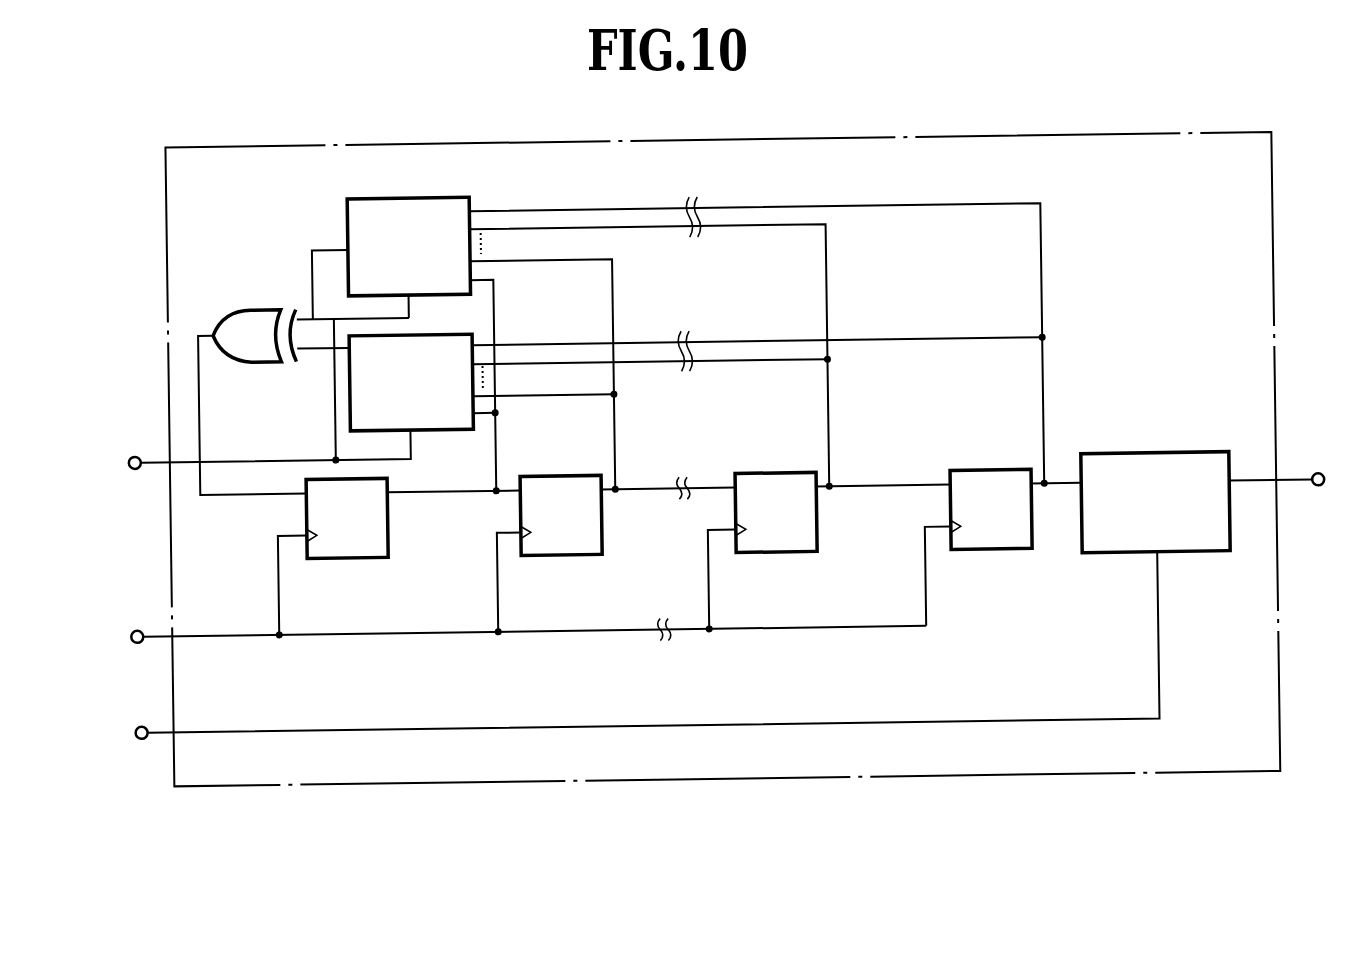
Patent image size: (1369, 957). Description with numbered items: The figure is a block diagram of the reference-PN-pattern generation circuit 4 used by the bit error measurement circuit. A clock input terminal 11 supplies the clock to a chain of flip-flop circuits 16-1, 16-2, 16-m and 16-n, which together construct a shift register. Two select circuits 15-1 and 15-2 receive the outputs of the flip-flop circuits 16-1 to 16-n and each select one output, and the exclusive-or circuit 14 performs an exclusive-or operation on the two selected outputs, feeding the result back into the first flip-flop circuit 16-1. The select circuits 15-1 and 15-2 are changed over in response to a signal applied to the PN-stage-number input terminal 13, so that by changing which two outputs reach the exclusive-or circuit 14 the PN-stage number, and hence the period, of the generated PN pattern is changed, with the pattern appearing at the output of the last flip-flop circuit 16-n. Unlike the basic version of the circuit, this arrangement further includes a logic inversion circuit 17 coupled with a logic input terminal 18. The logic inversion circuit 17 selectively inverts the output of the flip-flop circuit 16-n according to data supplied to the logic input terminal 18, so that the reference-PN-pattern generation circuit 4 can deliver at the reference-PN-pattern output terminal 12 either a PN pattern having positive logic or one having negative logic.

The reference-PN-pattern generation circuit 4 is at (908, 140).
The clock input terminal 11 is at (133, 622).
The reference-PN-pattern output terminal 12 is at (1318, 494).
The PN-stage-number input terminal 13 is at (136, 447).
The exclusive-or circuit 14 is at (275, 301).
The select circuit 15-1 is at (455, 194).
The select circuit 15-2 is at (465, 324).
The flip-flop circuit 16-1 is at (353, 553).
The flip-flop circuit 16-2 is at (560, 553).
The flip-flop circuit 16-m is at (773, 553).
The flip-flop circuit 16-n is at (985, 553).
The logic inversion circuit 17 is at (1192, 558).
The logic input terminal 18 is at (138, 731).